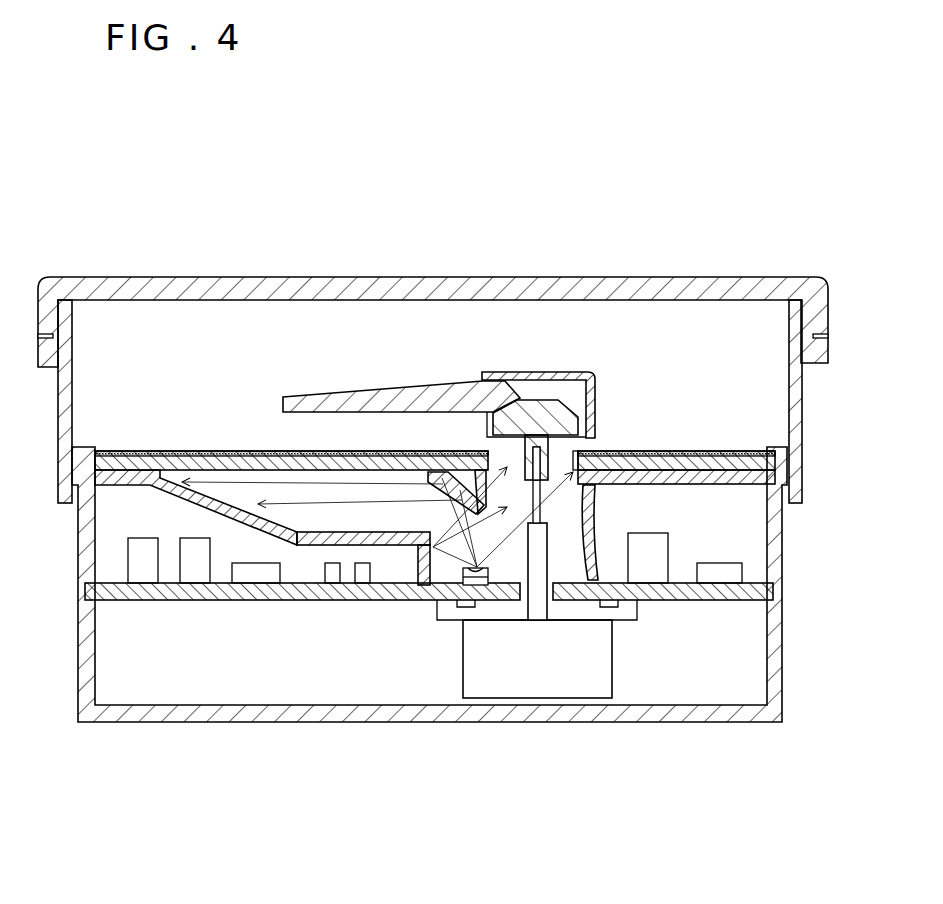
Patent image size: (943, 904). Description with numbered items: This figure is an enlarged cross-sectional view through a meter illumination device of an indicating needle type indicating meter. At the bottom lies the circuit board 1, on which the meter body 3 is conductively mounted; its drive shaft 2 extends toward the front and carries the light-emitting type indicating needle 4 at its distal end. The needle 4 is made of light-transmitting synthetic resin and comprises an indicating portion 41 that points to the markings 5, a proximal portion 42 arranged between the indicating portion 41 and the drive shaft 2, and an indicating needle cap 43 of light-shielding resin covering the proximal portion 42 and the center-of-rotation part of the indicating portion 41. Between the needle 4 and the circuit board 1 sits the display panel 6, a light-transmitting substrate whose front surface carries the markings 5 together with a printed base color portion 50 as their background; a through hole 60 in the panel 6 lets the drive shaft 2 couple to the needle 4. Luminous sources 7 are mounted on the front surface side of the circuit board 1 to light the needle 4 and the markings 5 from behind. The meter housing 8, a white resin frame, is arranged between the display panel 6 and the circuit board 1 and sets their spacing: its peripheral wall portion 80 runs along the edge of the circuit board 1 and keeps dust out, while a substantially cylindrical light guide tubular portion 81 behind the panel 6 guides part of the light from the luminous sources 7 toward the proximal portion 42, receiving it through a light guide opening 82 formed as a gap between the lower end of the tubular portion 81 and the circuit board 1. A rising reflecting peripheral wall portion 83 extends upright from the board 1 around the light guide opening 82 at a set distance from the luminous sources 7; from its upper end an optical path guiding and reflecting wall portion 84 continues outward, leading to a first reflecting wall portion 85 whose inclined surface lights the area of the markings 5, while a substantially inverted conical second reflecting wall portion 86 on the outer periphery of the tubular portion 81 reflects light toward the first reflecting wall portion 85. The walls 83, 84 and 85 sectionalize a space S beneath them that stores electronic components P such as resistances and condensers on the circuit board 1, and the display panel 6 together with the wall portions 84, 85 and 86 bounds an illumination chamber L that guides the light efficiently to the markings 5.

The circuit board 1 is at (727, 595).
The drive shaft 2 is at (540, 497).
The meter body 3 is at (567, 657).
The indicating needle 4 is at (443, 392).
The indicating portion 41 is at (370, 403).
The proximal portion 42 is at (533, 418).
The indicating needle cap 43 is at (577, 372).
The markings 5 is at (291, 419).
The base color portion 50 is at (138, 452).
The display panel 6 is at (718, 462).
The through hole 60 is at (578, 462).
The luminous sources 7 is at (460, 577).
The meter housing 8 is at (693, 480).
The peripheral wall portion 80 is at (88, 560).
The light guide tubular portion 81 is at (481, 475).
The light guide opening 82 is at (477, 536).
The rising reflecting peripheral wall portion 83 is at (428, 548).
The optical path guiding and reflecting wall portion 84 is at (327, 537).
The first reflecting wall portion 85 is at (235, 513).
The second reflecting wall portion 86 is at (430, 474).
The electronic components P is at (192, 570).
The space S is at (153, 514).
The illumination chamber L is at (307, 515).